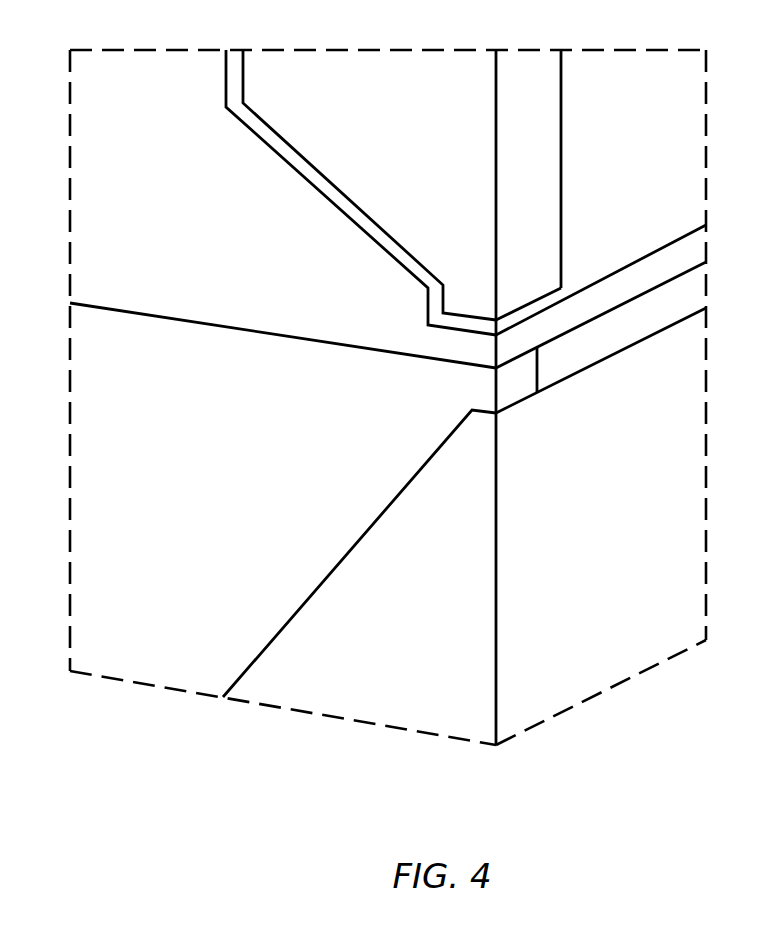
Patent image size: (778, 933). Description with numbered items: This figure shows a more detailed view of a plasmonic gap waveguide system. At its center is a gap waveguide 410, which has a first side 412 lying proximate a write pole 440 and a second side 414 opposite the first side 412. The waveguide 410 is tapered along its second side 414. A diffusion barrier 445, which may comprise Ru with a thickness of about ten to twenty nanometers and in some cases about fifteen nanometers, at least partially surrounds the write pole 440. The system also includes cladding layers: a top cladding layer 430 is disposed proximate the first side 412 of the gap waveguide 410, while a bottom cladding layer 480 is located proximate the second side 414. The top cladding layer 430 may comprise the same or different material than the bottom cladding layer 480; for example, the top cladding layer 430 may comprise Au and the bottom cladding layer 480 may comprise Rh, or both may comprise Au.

The gap waveguide 410 is at (90, 477).
The first side 412 is at (215, 323).
The second side 414 is at (322, 585).
The top cladding layer 430 is at (84, 205).
The write pole 440 is at (389, 70).
The diffusion barrier 445 is at (236, 58).
The bottom cladding layer 480 is at (363, 713).